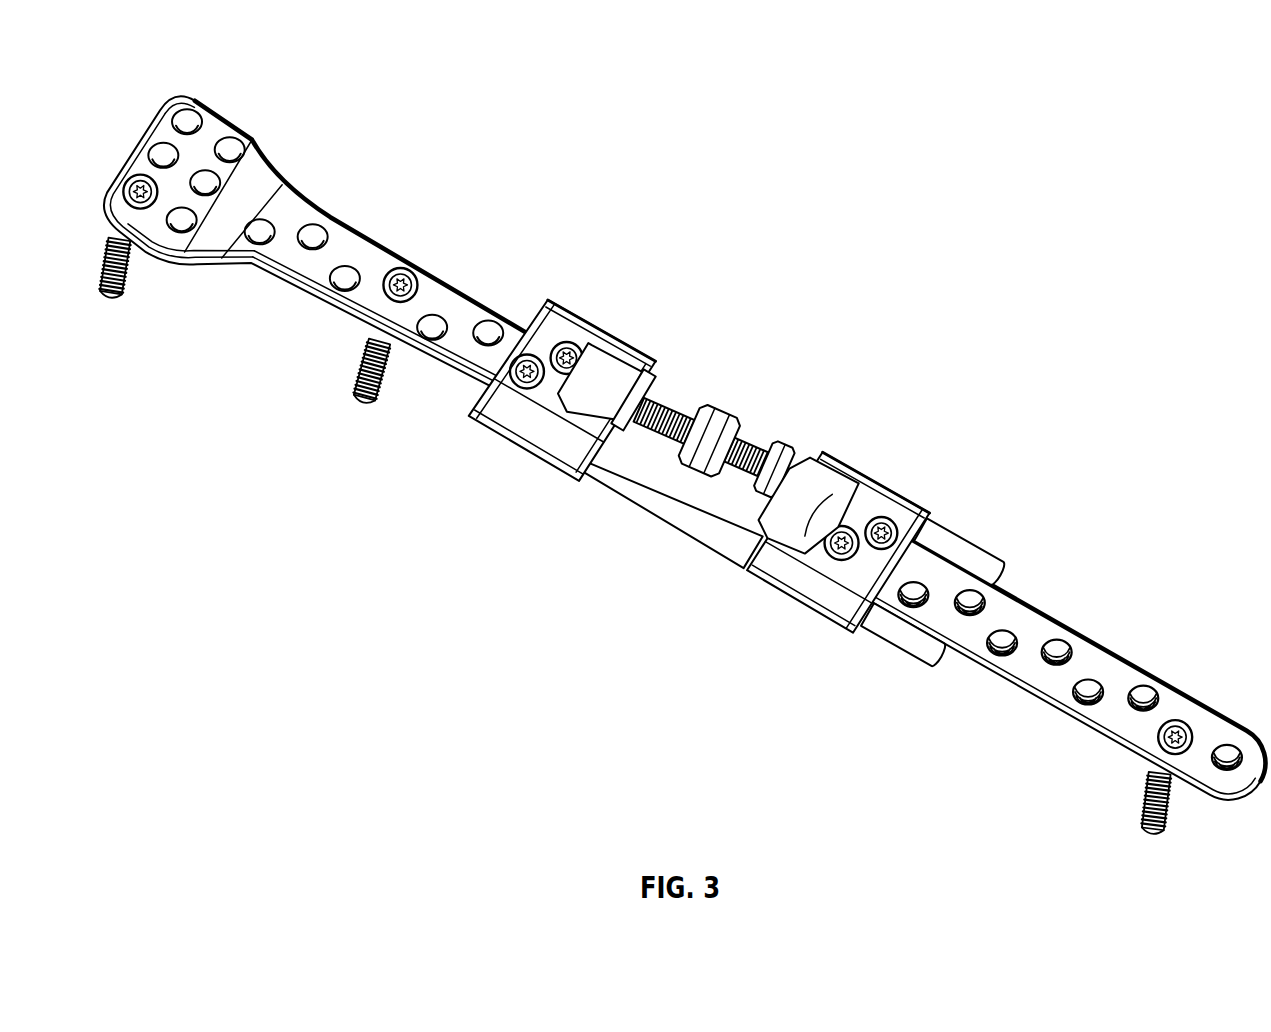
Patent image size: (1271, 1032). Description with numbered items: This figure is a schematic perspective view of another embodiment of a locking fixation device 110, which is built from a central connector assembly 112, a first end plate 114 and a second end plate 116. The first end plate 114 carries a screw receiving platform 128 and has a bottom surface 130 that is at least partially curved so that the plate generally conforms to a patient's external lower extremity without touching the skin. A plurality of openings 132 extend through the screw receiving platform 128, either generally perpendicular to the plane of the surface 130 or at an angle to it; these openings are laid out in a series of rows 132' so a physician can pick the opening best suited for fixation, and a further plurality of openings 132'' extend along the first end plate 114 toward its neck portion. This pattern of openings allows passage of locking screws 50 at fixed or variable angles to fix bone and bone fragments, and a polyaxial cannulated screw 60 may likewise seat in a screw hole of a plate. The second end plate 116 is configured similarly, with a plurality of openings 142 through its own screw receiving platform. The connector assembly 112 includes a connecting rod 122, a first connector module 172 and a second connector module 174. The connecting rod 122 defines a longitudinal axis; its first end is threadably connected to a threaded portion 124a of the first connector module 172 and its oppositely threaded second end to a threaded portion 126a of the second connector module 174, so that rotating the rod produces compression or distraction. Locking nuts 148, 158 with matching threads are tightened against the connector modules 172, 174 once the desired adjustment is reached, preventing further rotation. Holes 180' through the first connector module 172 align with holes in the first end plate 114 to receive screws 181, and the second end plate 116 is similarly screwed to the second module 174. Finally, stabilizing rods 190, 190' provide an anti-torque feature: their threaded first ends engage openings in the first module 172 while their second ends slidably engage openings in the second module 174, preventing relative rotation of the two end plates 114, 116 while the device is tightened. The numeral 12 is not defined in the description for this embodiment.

The locking fixation device 110 is at (652, 442).
The central connector assembly 112 is at (743, 489).
The distractor clamp assembly 12 is at (743, 489).
The first end plate 114 is at (198, 272).
The second end plate 116 is at (1069, 674).
The connecting rod 122 is at (750, 438).
The threaded portion of the first connector module 124a is at (620, 348).
The threaded portion of the second connector module 126a is at (843, 467).
The screw receiving platform 128 is at (294, 247).
The bottom surface 130 is at (423, 363).
The openings 132 is at (320, 253).
The rows of openings 132' is at (197, 96).
The further plurality of openings 132'' is at (290, 284).
The openings 142 is at (1140, 687).
The locking nut 148 is at (600, 477).
The locking nut 158 is at (800, 446).
The first connector module 172 is at (556, 383).
The second connector module 174 is at (903, 491).
The holes 180' is at (527, 330).
The screws 181 is at (568, 343).
The stabilizing rod 190 is at (904, 661).
The stabilizing rod 190' is at (971, 533).
The locking screws 50 is at (399, 276).
The polyaxial cannulated screw 60 is at (103, 262).